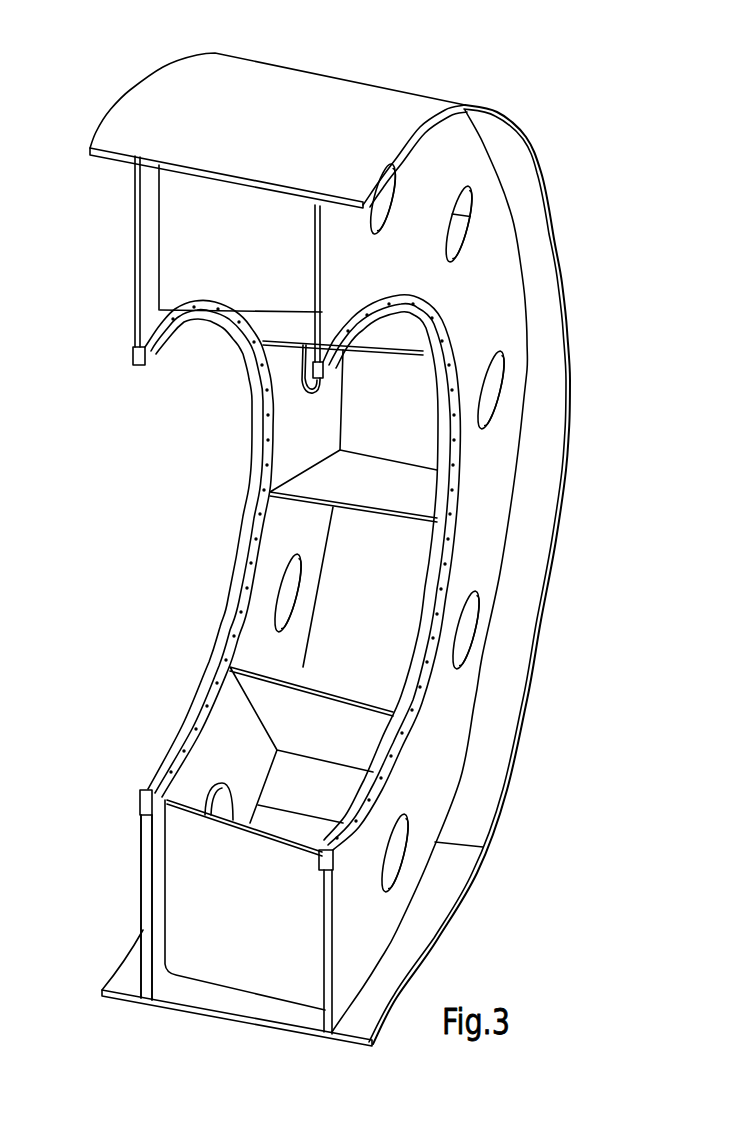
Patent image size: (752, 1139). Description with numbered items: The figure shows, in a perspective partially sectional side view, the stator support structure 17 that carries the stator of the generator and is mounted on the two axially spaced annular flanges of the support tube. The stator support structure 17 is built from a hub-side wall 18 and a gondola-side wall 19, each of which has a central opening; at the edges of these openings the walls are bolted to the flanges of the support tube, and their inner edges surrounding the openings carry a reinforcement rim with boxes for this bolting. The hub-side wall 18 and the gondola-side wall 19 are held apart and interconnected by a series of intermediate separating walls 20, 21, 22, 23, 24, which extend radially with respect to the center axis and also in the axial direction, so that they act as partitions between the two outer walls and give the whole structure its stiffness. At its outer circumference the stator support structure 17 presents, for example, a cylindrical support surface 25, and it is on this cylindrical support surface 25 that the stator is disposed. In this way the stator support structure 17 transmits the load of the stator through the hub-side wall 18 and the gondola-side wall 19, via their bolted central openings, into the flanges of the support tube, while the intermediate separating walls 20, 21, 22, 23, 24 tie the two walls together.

The stator support structure 17 is at (588, 148).
The hub-side wall 18 is at (147, 838).
The gondola-side wall 19 is at (362, 918).
The intermediate separating wall 20 is at (270, 924).
The intermediate separating wall 21 is at (330, 690).
The intermediate separating wall 22 is at (395, 494).
The intermediate separating wall 23 is at (383, 338).
The intermediate separating wall 24 is at (220, 298).
The cylindrical support surface 25 is at (332, 100).